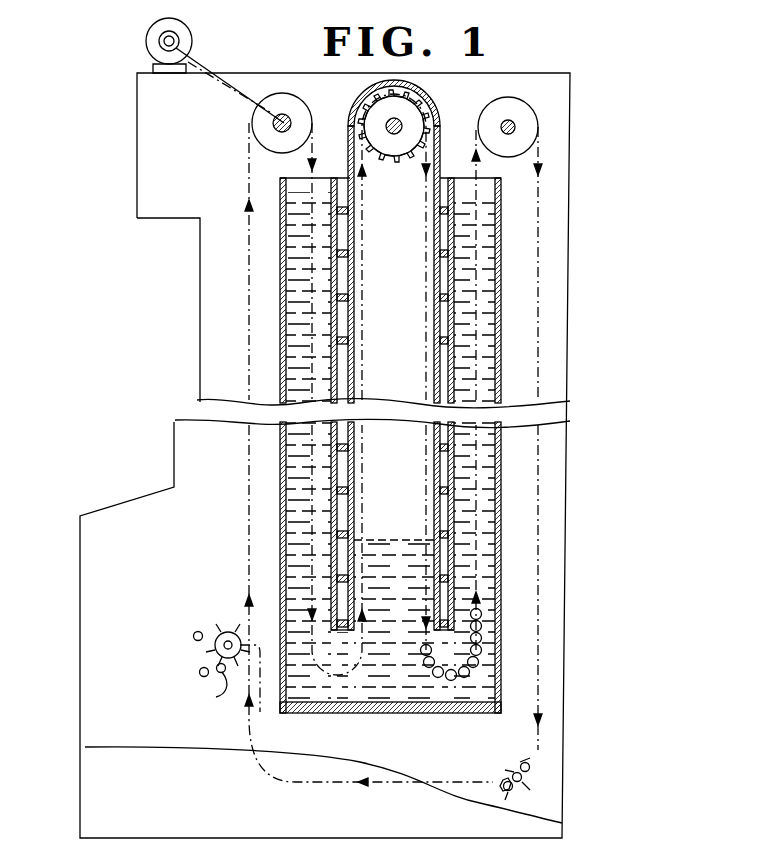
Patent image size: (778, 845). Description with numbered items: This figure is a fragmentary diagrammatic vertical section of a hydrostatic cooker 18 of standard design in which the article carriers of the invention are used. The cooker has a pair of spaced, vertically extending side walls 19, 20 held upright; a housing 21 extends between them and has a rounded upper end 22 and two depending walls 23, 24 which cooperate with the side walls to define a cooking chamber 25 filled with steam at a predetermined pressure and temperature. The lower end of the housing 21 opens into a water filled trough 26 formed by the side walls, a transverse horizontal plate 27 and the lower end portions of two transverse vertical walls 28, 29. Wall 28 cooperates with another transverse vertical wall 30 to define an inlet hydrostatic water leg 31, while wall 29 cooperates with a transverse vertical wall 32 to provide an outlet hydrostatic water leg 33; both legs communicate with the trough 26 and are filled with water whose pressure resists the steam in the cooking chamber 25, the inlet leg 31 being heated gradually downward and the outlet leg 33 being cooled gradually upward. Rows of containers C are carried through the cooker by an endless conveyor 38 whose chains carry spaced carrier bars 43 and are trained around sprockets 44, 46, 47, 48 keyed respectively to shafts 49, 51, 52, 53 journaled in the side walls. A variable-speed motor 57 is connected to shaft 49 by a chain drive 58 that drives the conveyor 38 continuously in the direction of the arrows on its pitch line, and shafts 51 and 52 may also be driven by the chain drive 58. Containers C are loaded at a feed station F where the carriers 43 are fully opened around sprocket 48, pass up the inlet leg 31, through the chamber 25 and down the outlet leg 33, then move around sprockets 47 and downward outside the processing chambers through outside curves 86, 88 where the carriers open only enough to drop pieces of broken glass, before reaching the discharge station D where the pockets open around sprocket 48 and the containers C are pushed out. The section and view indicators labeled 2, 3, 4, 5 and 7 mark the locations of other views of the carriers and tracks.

The hydrostatic cooker 18 is at (578, 212).
The side wall 19 is at (187, 420).
The side wall 20 is at (80, 785).
The housing 21 is at (418, 87).
The rounded upper end 22 is at (438, 96).
The depending wall 23 is at (346, 272).
The depending wall 24 is at (435, 286).
The cooking chamber 25 is at (410, 324).
The water filled trough 26 is at (383, 680).
The transverse horizontal plate 27 is at (326, 706).
The transverse vertical wall 28 is at (280, 244).
The transverse vertical wall 29 is at (501, 283).
The transverse vertical wall 30 is at (347, 456).
The inlet hydrostatic water leg 31 is at (290, 448).
The transverse vertical wall 32 is at (432, 435).
The outlet hydrostatic water leg 33 is at (487, 447).
The endless conveyor 38 is at (232, 300).
The carrier bar 43 is at (388, 92).
The sprocket 44 is at (258, 162).
The sprocket 46 is at (418, 156).
The sprocket 47 is at (520, 158).
The sprocket 48 is at (258, 690).
The shaft 49 is at (273, 123).
The shaft 51 is at (393, 125).
The shaft 52 is at (517, 127).
The shaft 53 is at (232, 632).
The variable-speed motor 57 is at (152, 37).
The chain drive 58 is at (205, 50).
The outside curve 86 is at (527, 752).
The outside curve 88 is at (250, 760).
The section line 2 is at (227, 552).
The section line 3 is at (513, 170).
The view 4 is at (176, 661).
The view 5 is at (482, 677).
The view 7 is at (540, 784).
The feed station F is at (182, 636).
The containers C is at (201, 668).
The discharge station D is at (191, 686).